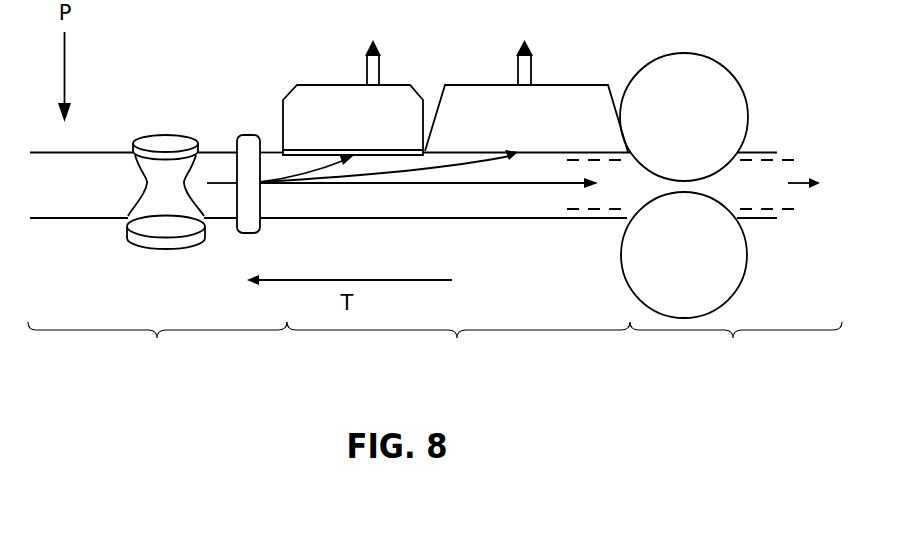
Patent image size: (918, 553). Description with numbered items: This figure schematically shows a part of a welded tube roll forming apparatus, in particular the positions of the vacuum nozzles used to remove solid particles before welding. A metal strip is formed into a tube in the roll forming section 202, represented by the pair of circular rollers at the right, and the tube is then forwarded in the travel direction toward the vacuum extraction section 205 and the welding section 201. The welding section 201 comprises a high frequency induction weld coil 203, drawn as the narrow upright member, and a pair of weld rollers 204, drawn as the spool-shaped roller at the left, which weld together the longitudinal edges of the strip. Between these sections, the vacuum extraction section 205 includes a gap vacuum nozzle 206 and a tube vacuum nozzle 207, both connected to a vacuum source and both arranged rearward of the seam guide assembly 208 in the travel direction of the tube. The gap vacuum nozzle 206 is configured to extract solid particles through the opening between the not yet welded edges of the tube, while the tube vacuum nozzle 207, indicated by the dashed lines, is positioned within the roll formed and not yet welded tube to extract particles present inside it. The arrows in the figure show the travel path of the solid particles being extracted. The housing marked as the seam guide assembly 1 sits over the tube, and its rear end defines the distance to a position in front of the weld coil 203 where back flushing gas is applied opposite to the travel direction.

The seam guide assembly 1 is at (298, 107).
The welding section 201 is at (157, 347).
The roll forming section 202 is at (731, 213).
The high frequency induction weld coil 203 is at (247, 153).
The weld rollers 204 is at (167, 165).
The vacuum extraction section 205 is at (458, 347).
The gap vacuum nozzle 206 is at (470, 96).
The tube vacuum nozzle 207 is at (619, 205).
The seam guide assembly 208 is at (350, 97).